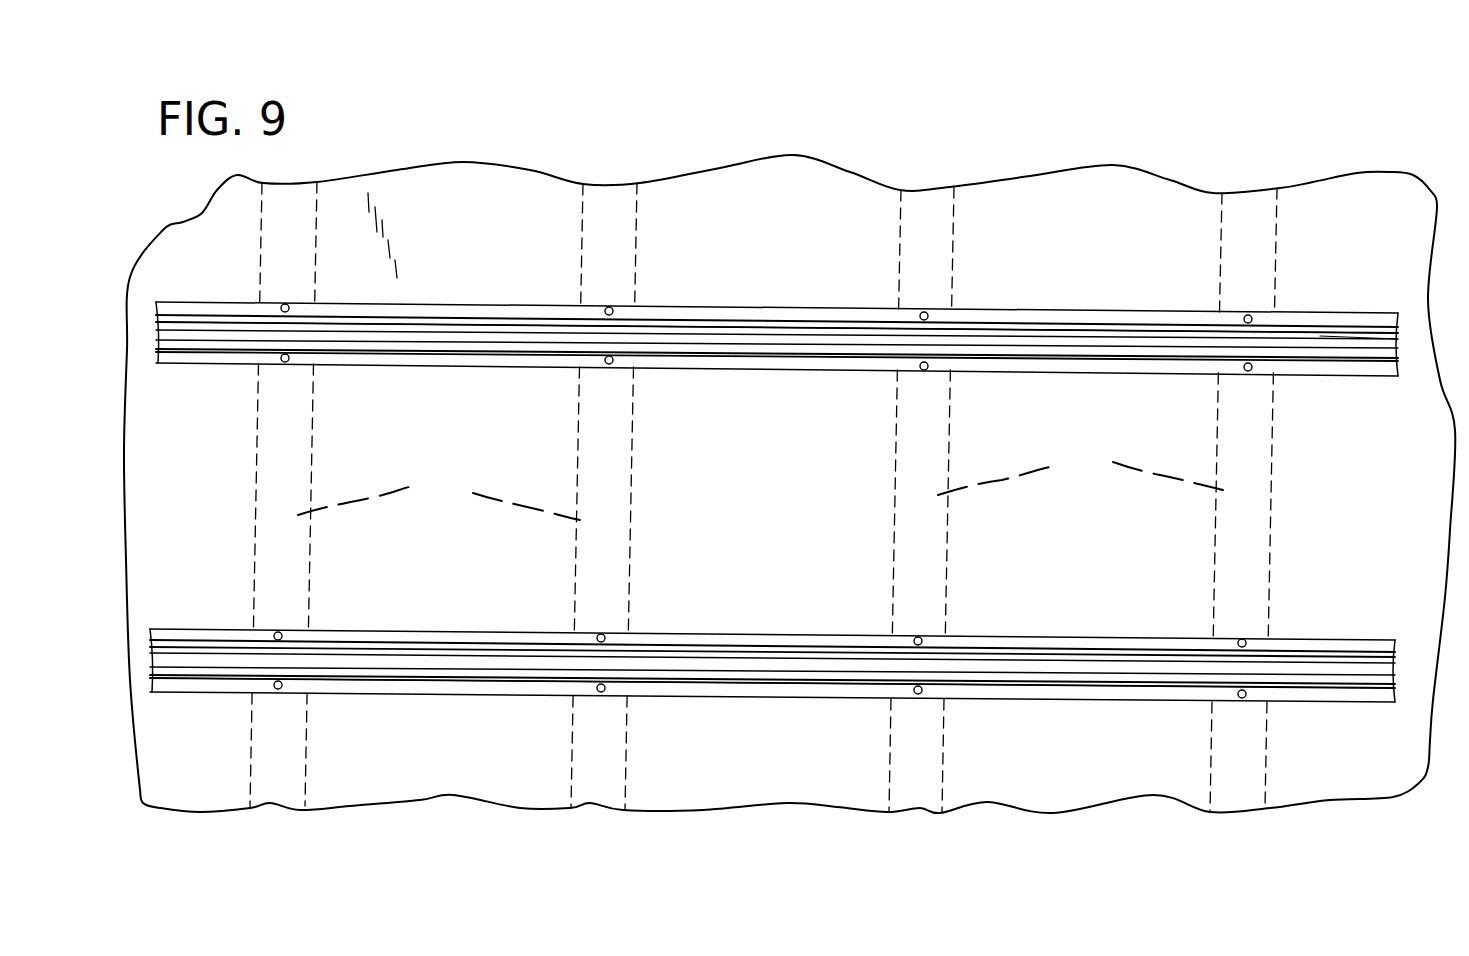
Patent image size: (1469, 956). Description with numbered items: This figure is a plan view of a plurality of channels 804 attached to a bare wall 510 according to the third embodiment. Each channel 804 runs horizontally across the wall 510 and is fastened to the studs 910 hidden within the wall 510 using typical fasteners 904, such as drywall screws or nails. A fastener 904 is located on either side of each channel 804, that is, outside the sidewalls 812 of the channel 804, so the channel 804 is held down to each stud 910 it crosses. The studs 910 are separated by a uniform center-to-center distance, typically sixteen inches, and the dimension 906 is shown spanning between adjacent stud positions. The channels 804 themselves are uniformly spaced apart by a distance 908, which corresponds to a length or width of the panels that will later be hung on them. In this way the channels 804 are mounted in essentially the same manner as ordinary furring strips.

The bare wall 510 is at (1048, 771).
The channel 804 is at (440, 366).
The sidewall 812 is at (1343, 330).
The fastener 904 is at (609, 307).
The rail segment spacing 906 is at (1253, 182).
The distance 908 is at (1403, 345).
The stud 910 is at (760, 483).